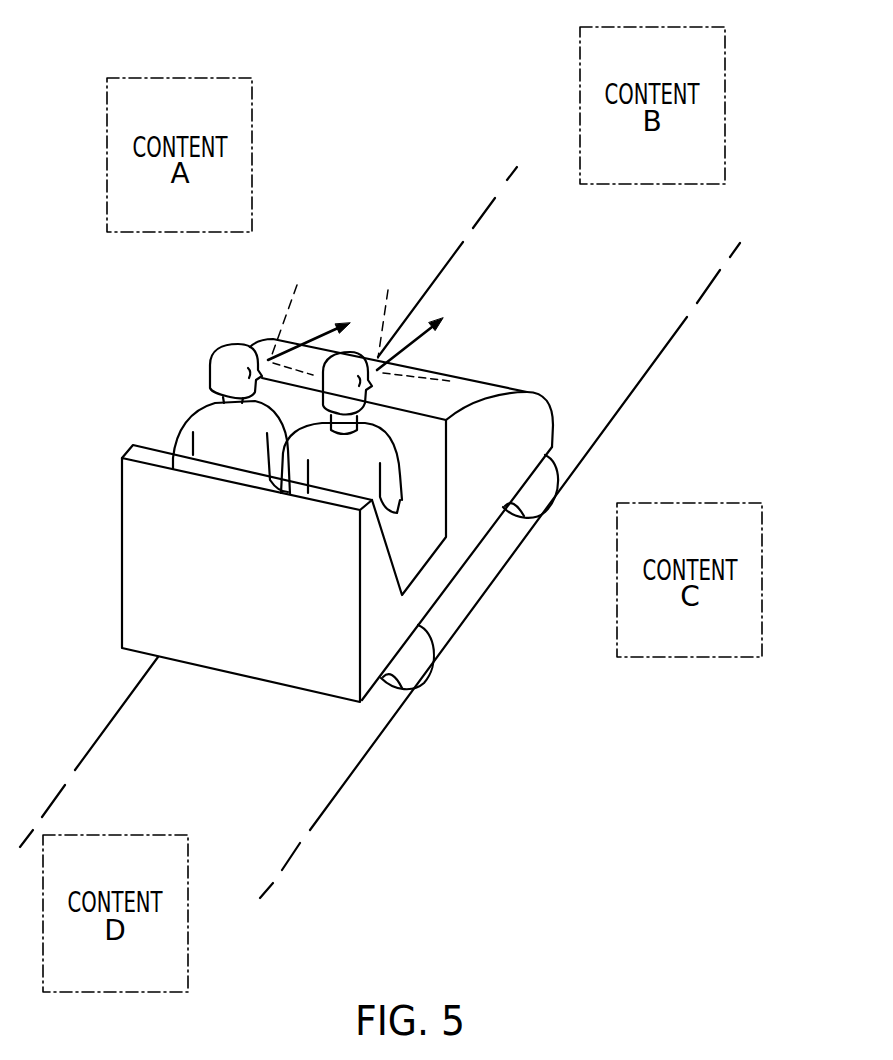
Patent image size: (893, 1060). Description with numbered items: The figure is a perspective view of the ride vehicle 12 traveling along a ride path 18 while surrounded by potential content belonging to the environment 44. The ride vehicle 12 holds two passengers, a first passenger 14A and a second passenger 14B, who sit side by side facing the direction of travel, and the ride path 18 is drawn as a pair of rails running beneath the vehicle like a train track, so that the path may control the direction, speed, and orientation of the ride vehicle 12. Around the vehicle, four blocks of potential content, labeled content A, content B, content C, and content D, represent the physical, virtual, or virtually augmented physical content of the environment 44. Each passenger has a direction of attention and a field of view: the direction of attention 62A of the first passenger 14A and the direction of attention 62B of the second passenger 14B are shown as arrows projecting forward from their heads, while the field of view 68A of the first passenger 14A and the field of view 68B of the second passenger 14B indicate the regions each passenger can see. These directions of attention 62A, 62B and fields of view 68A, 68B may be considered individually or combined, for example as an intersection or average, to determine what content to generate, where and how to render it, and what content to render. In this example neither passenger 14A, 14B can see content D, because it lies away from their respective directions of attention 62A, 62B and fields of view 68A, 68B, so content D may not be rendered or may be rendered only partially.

The ride vehicle 12 is at (145, 580).
The first passenger 14A is at (230, 440).
The second passenger 14B is at (330, 473).
The ride path 18 is at (339, 792).
The environment 44 is at (58, 470).
The direction of attention of first passenger 62A is at (288, 342).
The direction of attention of second passenger 62B is at (422, 338).
The field of view of first passenger 68A is at (316, 319).
The field of view of second passenger 68B is at (428, 311).